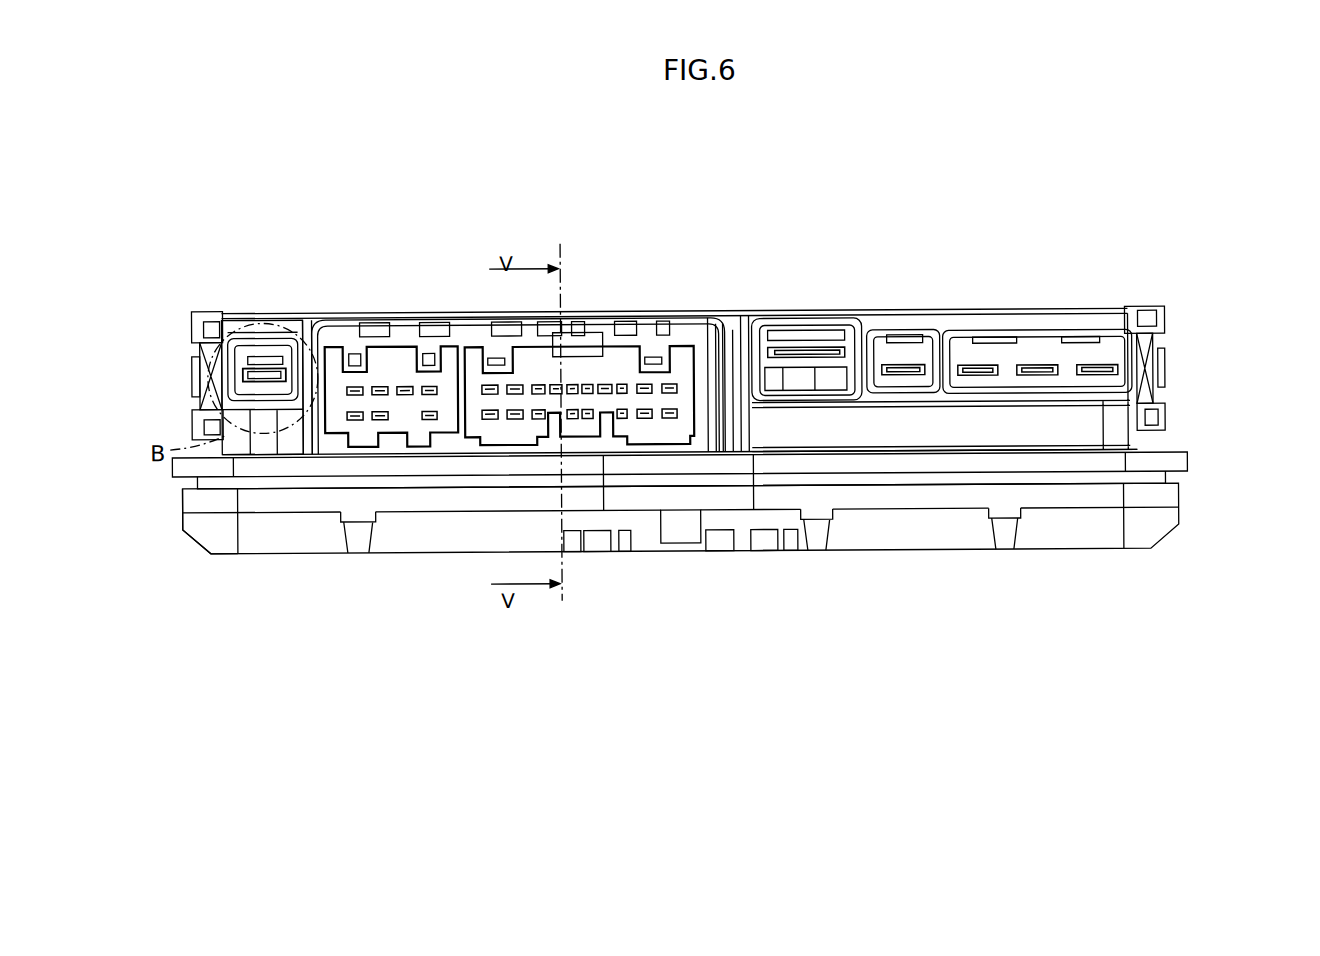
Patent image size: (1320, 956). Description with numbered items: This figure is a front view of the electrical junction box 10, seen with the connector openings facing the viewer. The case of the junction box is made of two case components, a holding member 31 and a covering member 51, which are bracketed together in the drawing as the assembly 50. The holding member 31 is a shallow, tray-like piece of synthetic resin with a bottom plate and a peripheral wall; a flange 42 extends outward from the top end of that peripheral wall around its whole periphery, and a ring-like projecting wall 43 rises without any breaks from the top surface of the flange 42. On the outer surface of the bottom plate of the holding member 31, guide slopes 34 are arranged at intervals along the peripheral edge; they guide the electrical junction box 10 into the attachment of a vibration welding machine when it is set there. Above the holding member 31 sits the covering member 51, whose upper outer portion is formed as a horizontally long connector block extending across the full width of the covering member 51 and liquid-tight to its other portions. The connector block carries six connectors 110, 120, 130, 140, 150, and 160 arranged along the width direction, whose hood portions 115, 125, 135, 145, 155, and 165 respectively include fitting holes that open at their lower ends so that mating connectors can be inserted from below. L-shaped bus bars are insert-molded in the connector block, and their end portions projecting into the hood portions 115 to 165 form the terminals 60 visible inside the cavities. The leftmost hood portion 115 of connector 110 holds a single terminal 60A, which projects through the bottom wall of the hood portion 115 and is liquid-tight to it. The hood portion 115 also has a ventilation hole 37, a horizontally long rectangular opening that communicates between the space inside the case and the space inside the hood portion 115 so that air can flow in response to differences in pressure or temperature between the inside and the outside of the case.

The electrical junction box 10 is at (1118, 218).
The holding member 31 is at (1170, 500).
The guide slopes 34 is at (362, 537).
The ventilation hole 37 is at (258, 355).
The flange 42 is at (190, 508).
The projecting wall 43 is at (203, 486).
The covering member assembly 50 is at (1250, 420).
The covering member 51 is at (1178, 462).
The terminals 60 is at (404, 386).
The terminal 60A is at (278, 368).
The connector 110 is at (250, 334).
The hood portion 115 is at (236, 337).
The connector 120 is at (922, 307).
The hood portion 125 is at (895, 331).
The connector 130 is at (799, 299).
The hood portion 135 is at (765, 326).
The connector 140 is at (562, 311).
The hood portion 145 is at (468, 345).
The connector 150 is at (391, 330).
The hood portion 155 is at (343, 345).
The connector 160 is at (1037, 280).
The hood portion 165 is at (978, 332).